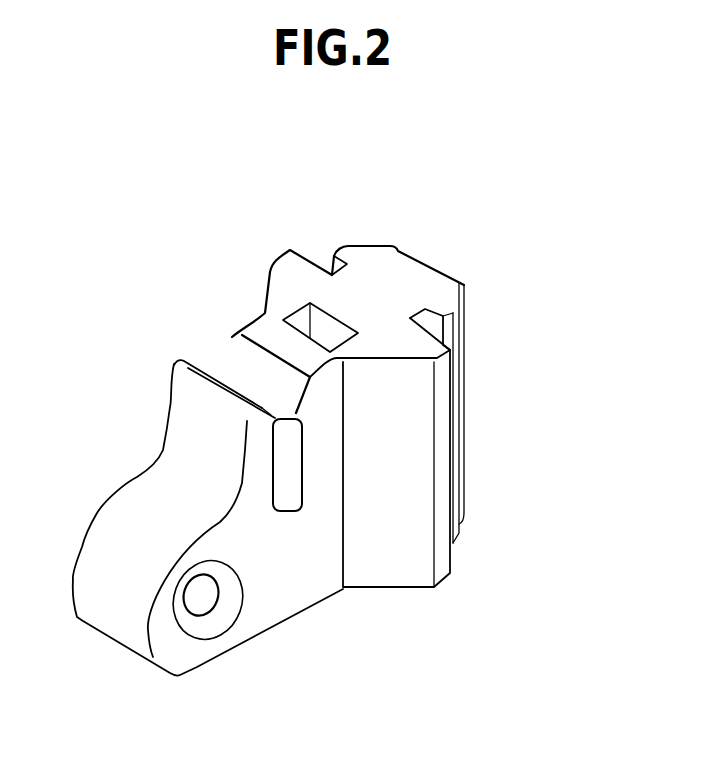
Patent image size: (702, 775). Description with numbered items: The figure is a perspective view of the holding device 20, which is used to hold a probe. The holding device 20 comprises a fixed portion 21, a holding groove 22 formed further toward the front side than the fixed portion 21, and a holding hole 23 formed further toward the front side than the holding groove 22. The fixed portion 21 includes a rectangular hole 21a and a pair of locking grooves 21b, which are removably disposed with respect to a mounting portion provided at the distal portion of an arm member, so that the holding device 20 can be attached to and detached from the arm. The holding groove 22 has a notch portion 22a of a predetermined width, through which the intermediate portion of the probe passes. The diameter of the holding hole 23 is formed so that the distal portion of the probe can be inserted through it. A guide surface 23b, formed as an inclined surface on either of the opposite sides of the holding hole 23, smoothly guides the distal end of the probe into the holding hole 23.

The holding device 20 is at (331, 425).
The fixed portion 21 is at (411, 363).
The rectangular hole 21a is at (333, 316).
The locking grooves 21b is at (323, 253).
The holding groove 22 is at (277, 495).
The notch portion 22a is at (258, 393).
The holding hole 23 is at (200, 588).
The guide surface 23b is at (232, 585).